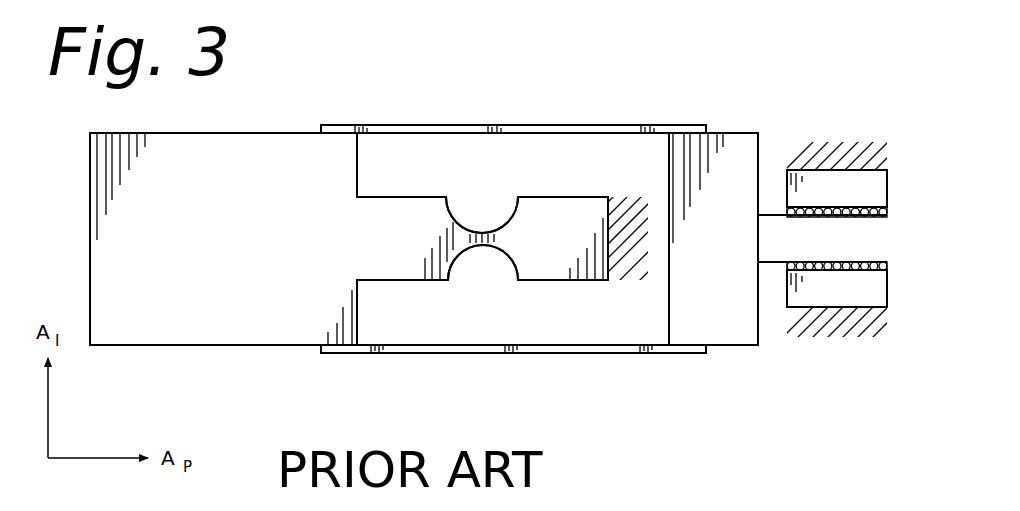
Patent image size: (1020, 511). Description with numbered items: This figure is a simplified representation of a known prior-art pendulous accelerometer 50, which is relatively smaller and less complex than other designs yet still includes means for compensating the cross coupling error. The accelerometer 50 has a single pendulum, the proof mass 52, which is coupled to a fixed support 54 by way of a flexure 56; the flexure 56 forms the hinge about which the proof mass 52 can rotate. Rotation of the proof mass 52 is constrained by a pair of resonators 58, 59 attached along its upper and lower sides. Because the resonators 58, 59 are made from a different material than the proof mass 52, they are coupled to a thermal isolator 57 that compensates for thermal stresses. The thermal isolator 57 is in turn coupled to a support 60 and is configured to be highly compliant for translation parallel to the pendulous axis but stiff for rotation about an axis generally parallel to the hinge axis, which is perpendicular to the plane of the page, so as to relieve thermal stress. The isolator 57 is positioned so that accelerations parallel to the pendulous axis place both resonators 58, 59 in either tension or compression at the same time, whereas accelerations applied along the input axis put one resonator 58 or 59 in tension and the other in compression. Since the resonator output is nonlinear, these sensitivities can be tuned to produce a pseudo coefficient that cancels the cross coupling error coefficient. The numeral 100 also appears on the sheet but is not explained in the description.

The accelerometer 50 is at (560, 105).
The proof mass 52 is at (191, 320).
The fixed support 54 is at (548, 262).
The flexure 56 is at (484, 230).
The thermal isolator 57 is at (798, 362).
The resonator 58 is at (418, 353).
The resonator 59 is at (443, 125).
The support 60 is at (845, 190).
The reference numeral 100 is at (750, 501).